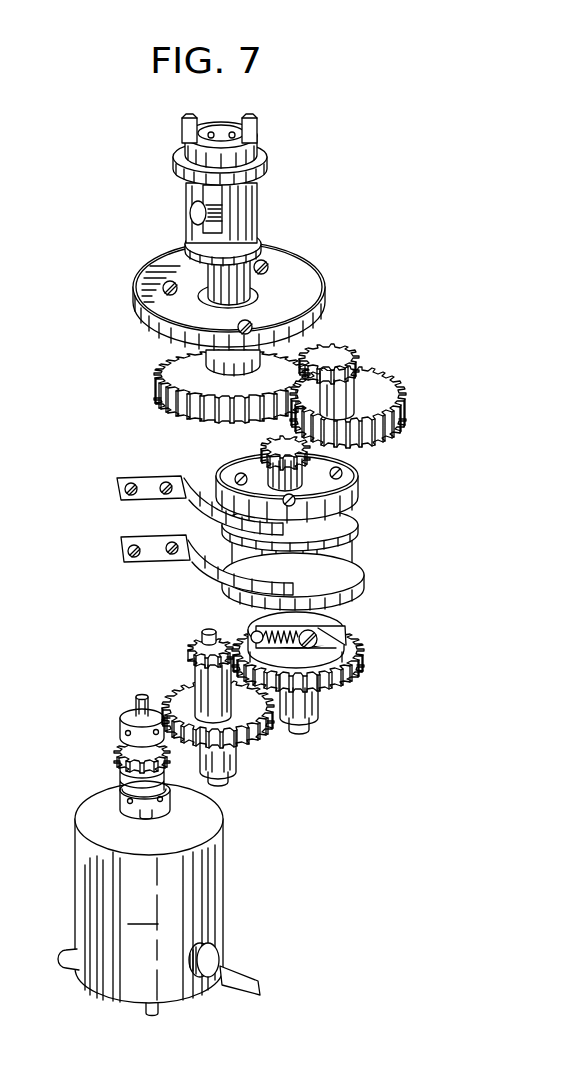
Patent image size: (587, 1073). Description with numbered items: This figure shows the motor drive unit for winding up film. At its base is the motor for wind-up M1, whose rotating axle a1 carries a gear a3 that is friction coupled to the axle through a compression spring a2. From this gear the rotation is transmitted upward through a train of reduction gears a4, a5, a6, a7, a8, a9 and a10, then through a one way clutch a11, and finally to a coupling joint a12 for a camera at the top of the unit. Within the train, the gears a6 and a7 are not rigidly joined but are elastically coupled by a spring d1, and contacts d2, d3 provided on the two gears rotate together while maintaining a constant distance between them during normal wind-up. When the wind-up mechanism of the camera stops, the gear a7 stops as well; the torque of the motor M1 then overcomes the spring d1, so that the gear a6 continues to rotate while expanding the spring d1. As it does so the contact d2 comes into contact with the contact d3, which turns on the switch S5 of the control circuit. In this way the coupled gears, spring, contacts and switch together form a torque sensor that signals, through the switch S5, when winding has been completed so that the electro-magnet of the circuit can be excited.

The motor for wind-up M1 is at (159, 899).
The rotating axle a1 is at (136, 701).
The compression spring a2 is at (122, 790).
The gear a3 is at (116, 749).
The reduction gear a4 is at (247, 740).
The reduction gear a5 is at (186, 650).
The gear a6 is at (352, 661).
The gear a7 is at (266, 448).
The reduction gear a8 is at (396, 398).
The reduction gear a9 is at (355, 362).
The reduction gear a10 is at (160, 383).
The one way clutch a11 is at (304, 285).
The coupling joint a12 is at (258, 122).
The spring d1 is at (262, 619).
The contact d2 is at (231, 540).
The contact d3 is at (358, 547).
The switch S5 is at (105, 477).